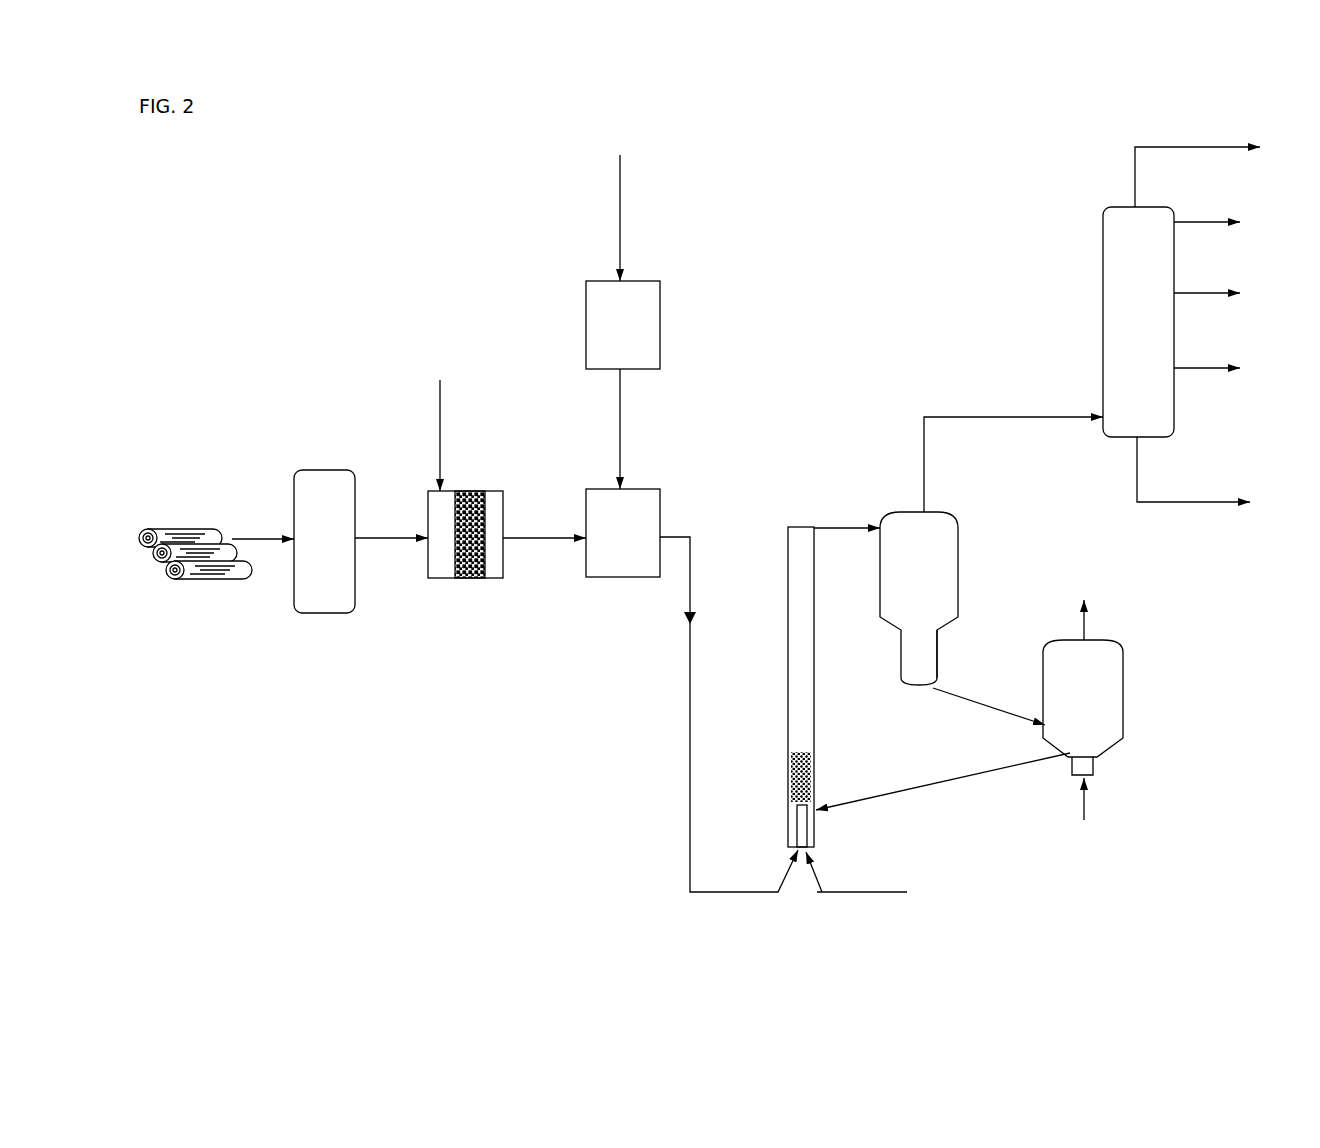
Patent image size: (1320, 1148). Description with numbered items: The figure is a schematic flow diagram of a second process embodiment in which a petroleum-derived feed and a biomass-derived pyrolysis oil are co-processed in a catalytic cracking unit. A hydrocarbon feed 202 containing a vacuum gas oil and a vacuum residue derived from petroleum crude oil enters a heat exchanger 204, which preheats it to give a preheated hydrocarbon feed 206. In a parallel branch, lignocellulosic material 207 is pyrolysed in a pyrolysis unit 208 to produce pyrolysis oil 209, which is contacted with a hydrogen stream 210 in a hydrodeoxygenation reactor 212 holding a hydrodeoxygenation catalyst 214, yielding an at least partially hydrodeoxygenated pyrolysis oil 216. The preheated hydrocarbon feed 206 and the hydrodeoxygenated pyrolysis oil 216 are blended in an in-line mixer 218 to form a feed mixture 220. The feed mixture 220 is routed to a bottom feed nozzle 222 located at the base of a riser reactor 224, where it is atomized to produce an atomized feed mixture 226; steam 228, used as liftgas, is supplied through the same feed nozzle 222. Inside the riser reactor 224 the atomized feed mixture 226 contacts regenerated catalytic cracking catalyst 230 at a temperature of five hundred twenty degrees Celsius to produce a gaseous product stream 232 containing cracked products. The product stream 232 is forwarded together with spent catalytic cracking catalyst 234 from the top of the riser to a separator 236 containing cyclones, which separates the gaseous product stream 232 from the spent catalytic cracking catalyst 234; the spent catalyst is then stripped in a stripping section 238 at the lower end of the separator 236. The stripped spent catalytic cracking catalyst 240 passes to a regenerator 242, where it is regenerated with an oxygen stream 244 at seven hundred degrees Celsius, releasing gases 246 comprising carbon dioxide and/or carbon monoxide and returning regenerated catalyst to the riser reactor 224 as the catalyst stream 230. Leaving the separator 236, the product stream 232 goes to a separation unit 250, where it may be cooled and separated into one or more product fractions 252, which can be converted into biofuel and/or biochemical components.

The hydrocarbon feed 202 is at (620, 212).
The heat exchanger 204 is at (660, 284).
The preheated hydrocarbon feed 206 is at (620, 400).
The lignocellulosic material 207 is at (198, 583).
The pyrolysis unit 208 is at (323, 613).
The pyrolysis oil 209 is at (403, 538).
The hydrogen stream 210 is at (440, 415).
The hydrodeoxygenation reactor 212 is at (442, 578).
The hydrodeoxygenation catalyst 214 is at (467, 560).
The at least partially hydrodeoxygenated pyrolysis oil 216 is at (560, 538).
The in-line mixer 218 is at (620, 577).
The feed mixture 220 is at (690, 685).
The bottom feed nozzle 222 is at (799, 828).
The riser reactor 224 is at (788, 577).
The atomized feed mixture 226 is at (791, 785).
The steam 228 is at (810, 870).
The regenerated catalytic cracking catalyst 230 is at (913, 788).
The gaseous product stream 232 is at (832, 527).
The spent catalytic cracking catalyst 234 is at (862, 533).
The separator 236 is at (958, 543).
The stripping section 238 is at (937, 645).
The stripped spent catalytic cracking catalyst 240 is at (983, 702).
The regenerator 242 is at (1123, 675).
The oxygen stream 244 is at (1084, 800).
The gases 246 is at (1084, 612).
The separation unit 250 is at (1103, 282).
The product fractions 252 is at (1203, 148).